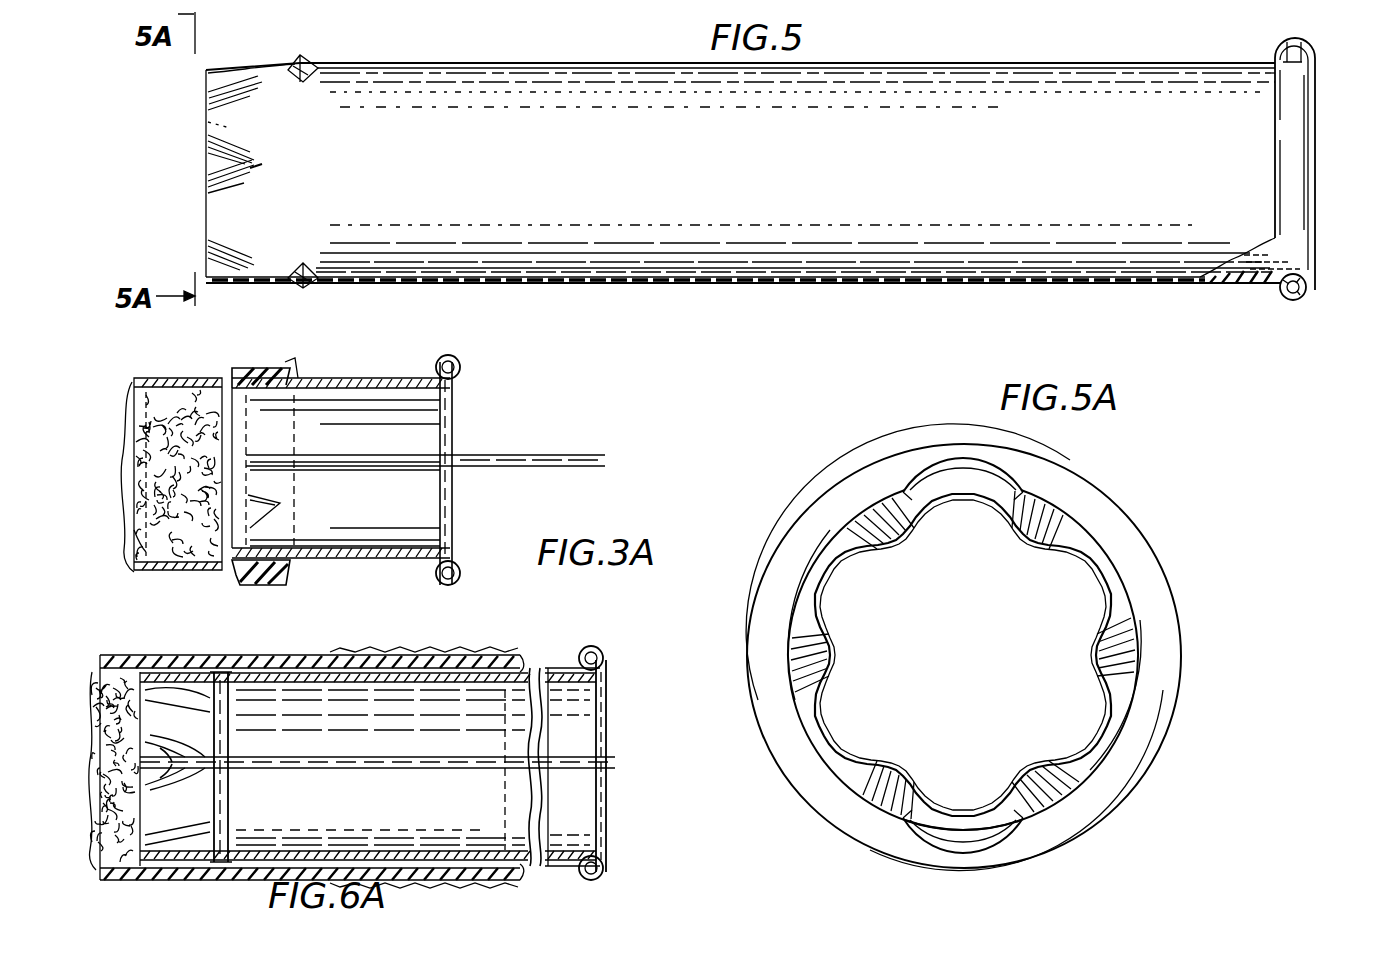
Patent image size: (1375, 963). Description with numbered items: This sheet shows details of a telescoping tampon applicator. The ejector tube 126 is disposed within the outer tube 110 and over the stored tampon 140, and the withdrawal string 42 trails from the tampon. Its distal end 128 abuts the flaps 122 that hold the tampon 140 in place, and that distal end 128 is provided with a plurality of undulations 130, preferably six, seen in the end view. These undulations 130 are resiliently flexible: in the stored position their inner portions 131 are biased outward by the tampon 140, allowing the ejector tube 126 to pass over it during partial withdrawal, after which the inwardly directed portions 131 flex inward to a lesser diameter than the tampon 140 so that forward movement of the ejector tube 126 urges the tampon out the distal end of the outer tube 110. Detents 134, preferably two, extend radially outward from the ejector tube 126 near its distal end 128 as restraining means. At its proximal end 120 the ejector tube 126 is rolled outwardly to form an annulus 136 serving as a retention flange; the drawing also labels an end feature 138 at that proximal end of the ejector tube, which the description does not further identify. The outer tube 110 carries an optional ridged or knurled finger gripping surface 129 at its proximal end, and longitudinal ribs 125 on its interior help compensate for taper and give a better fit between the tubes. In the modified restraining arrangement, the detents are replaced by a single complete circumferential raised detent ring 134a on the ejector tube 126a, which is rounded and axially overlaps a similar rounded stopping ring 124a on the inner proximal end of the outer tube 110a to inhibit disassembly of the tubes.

In FIG. 3A, the withdrawal string 42 is at (554, 454).
In FIG. 3A, the outer tube 110 is at (171, 568).
In FIG. 6A, the outer tube 110a is at (178, 656).
In FIG. 3A, the proximal end 120 is at (304, 366).
In FIG. 3A, the flaps 122 is at (128, 482).
In FIG. 6A, the stopping ring 124a is at (486, 870).
In FIG. 3A, the longitudinal ribs 125 is at (282, 503).
In FIG. 5, the ejector tube 126 is at (735, 283).
In FIG. 6A, the ejector tube 126a is at (570, 672).
In FIG. 5, the distal end 128 is at (271, 57).
In FIG. 3A, the finger gripping surface 129 is at (242, 368).
In FIG. 5, the undulations 130 is at (243, 225).
In FIG. 5A, the undulations 130 is at (958, 505).
In FIG. 5, the inner portions 131 is at (214, 148).
In FIG. 5A, the inner portions 131 is at (1096, 650).
In FIG. 5, the detents 134 is at (313, 62).
In FIG. 5A, the detents 134 is at (960, 462).
In FIG. 6A, the detent ring 134a is at (224, 705).
In FIG. 5, the annulus 136 is at (1290, 302).
In FIG. 5A, the annulus 136 is at (1142, 533).
In FIG. 3A, the annulus 136 is at (460, 362).
In FIG. 6A, the annulus 136 is at (602, 876).
In FIG. 5, the end cap 138 is at (1322, 80).
In FIG. 3A, the tampon 140 is at (132, 405).